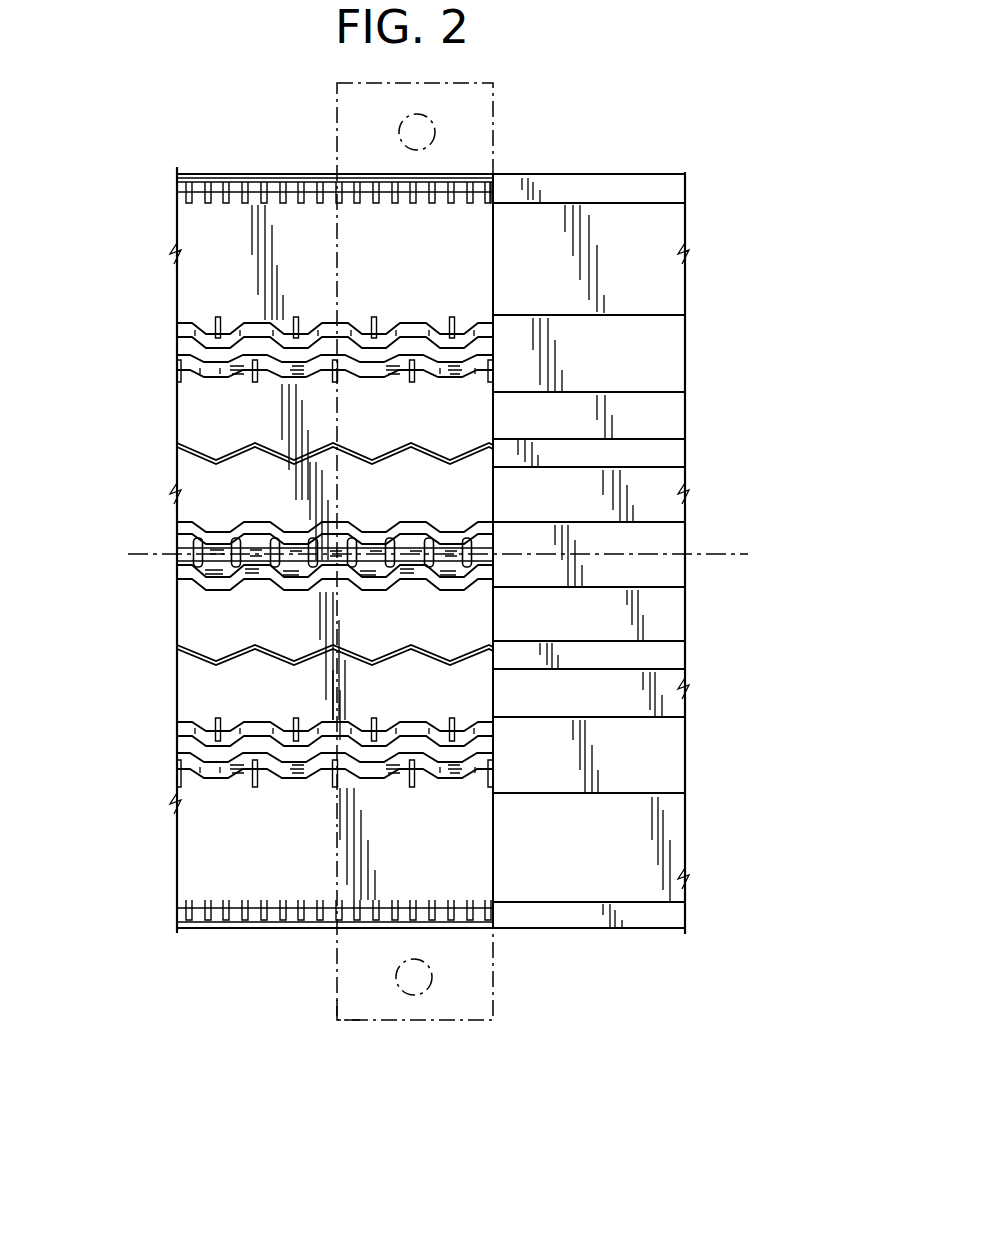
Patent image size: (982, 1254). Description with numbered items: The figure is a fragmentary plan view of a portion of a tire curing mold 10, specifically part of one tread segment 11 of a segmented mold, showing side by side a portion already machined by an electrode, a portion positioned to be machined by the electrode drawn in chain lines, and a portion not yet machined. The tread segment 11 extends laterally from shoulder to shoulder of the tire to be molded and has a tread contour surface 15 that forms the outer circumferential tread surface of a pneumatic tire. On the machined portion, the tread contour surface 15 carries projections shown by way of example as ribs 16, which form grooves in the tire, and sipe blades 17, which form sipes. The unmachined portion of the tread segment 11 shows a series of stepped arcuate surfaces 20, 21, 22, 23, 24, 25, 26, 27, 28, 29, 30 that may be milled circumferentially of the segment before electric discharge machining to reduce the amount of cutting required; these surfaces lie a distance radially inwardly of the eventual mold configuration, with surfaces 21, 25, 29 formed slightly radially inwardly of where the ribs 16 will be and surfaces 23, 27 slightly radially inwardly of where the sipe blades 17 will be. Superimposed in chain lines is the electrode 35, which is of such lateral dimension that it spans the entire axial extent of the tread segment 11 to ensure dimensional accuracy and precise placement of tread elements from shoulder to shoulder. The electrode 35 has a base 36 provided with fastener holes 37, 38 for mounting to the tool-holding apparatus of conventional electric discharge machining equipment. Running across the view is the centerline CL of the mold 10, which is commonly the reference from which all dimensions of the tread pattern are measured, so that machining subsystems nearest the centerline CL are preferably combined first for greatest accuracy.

The tire curing mold 10 is at (212, 160).
The tread segment 11 is at (175, 857).
The tread contour surface 15 is at (210, 288).
The ribs 16 is at (188, 345).
The sipe blades 17 is at (198, 448).
The stepped arcuate surface 20 is at (670, 293).
The stepped arcuate surface 21 is at (670, 358).
The stepped arcuate surface 22 is at (672, 418).
The stepped arcuate surface 23 is at (675, 455).
The stepped arcuate surface 24 is at (667, 508).
The stepped arcuate surface 25 is at (675, 540).
The stepped arcuate surface 26 is at (665, 616).
The stepped arcuate surface 27 is at (672, 657).
The stepped arcuate surface 28 is at (675, 705).
The stepped arcuate surface 29 is at (665, 762).
The stepped arcuate surface 30 is at (675, 855).
The electrode 35 is at (497, 115).
The base 36 is at (348, 1022).
The fastener hole 37 is at (415, 990).
The fastener hole 38 is at (405, 130).
The centerline CL is at (752, 556).